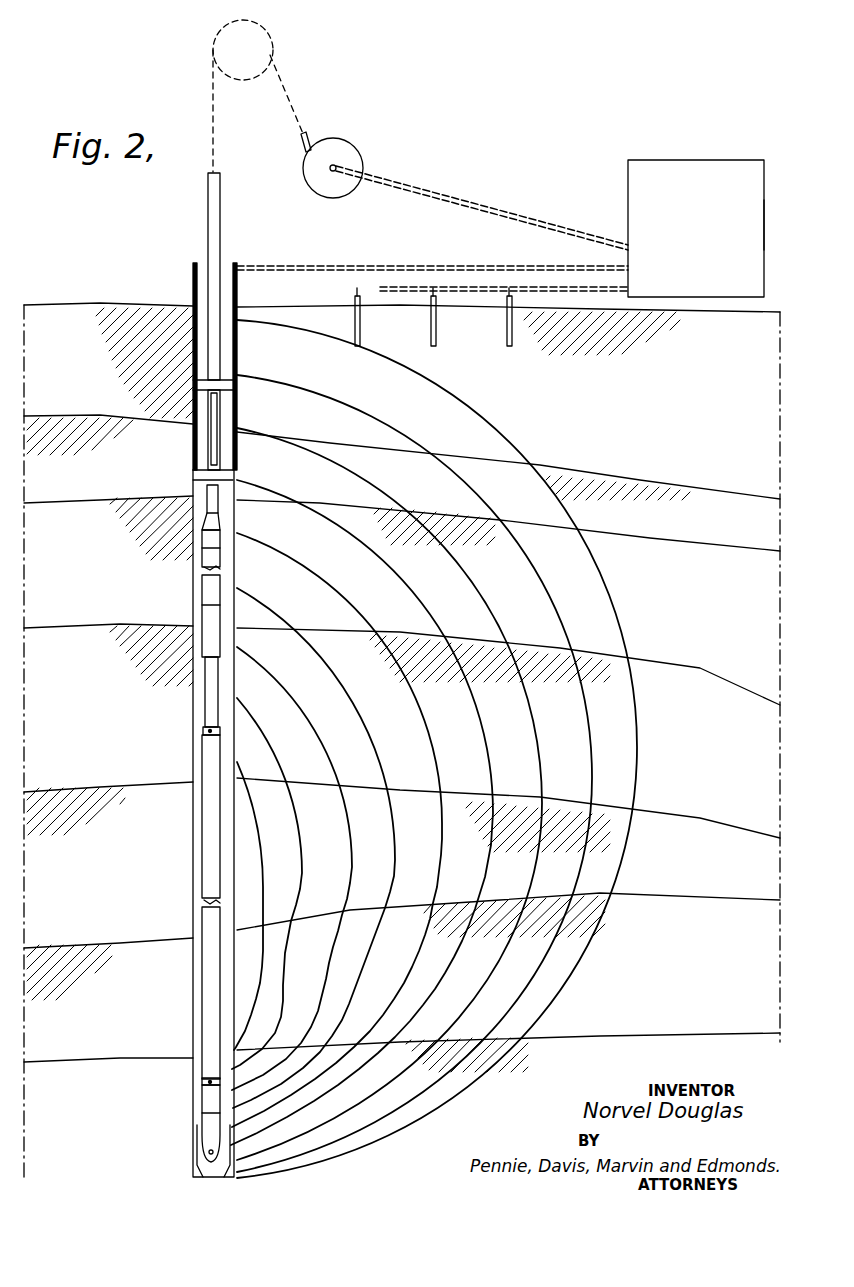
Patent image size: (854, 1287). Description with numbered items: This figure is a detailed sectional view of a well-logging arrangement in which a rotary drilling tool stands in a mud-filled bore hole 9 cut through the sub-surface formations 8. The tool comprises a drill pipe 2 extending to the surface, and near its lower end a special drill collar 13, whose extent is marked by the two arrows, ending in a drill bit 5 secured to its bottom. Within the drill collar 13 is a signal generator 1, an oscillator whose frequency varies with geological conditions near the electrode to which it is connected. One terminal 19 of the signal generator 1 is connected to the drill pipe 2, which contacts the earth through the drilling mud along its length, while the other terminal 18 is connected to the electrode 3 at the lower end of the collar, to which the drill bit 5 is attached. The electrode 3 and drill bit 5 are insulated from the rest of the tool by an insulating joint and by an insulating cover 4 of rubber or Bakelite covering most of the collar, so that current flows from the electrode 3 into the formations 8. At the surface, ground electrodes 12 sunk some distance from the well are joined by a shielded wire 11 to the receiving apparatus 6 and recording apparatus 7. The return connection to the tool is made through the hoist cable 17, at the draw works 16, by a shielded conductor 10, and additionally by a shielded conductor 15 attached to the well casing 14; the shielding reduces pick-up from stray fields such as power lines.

The signal generator 1 is at (205, 935).
The drill pipe 2 is at (220, 252).
The electrode 3 is at (208, 1094).
The insulating cover 4 is at (203, 997).
The drill bit 5 is at (205, 1160).
The receiving apparatus 6 is at (762, 224).
The recording apparatus 7 is at (762, 228).
The sub-surface formations 8 is at (341, 604).
The bore hole 9 is at (193, 702).
The shielded conductor 10 is at (521, 220).
The shielded wire 11 is at (380, 292).
The ground electrodes 12 is at (507, 332).
The drill collar 13 is at (180, 600).
The well casing 14 is at (193, 288).
The shielded conductor 15 is at (408, 268).
The hoist cable connection 16 is at (346, 150).
The cable 17 is at (302, 147).
The terminal 18 is at (210, 1082).
The terminal 19 is at (209, 730).